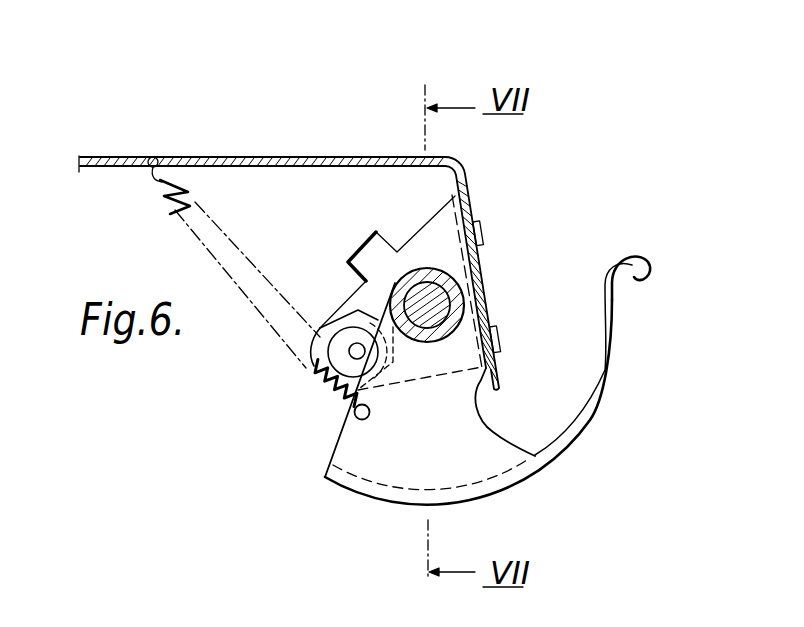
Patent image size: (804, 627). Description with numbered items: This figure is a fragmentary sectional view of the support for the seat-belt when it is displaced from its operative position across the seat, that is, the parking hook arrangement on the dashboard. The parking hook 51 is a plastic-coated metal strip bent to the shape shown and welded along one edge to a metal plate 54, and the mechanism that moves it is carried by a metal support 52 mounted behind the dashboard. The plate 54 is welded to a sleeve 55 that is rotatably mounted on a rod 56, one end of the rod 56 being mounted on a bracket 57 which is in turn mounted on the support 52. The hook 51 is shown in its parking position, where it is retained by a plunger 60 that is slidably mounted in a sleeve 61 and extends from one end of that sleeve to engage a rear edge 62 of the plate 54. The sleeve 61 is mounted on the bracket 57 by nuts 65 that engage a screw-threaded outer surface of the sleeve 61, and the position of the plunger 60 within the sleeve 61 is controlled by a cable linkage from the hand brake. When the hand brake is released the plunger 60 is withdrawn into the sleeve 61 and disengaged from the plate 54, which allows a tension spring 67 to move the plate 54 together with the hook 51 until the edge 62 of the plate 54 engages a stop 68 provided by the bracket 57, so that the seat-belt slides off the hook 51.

The parking hook 51 is at (617, 342).
The metal support 52 is at (465, 181).
The metal plate 54 is at (487, 445).
The sleeve 55 is at (457, 293).
The rod 56 is at (432, 311).
The bracket 57 is at (470, 262).
The plunger 60 is at (356, 343).
The sleeve 61 is at (327, 377).
The rear edge 62 is at (329, 448).
The nuts 65 is at (320, 333).
The tension spring 67 is at (192, 196).
The stop 68 is at (386, 209).